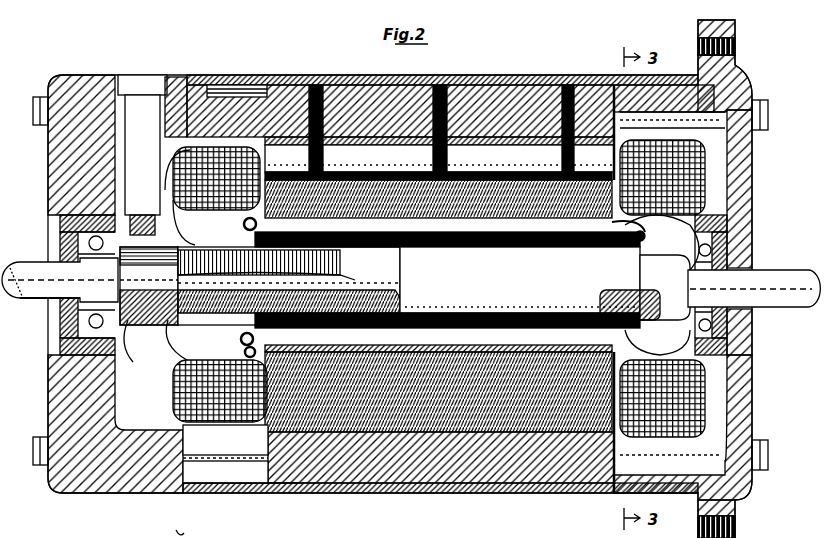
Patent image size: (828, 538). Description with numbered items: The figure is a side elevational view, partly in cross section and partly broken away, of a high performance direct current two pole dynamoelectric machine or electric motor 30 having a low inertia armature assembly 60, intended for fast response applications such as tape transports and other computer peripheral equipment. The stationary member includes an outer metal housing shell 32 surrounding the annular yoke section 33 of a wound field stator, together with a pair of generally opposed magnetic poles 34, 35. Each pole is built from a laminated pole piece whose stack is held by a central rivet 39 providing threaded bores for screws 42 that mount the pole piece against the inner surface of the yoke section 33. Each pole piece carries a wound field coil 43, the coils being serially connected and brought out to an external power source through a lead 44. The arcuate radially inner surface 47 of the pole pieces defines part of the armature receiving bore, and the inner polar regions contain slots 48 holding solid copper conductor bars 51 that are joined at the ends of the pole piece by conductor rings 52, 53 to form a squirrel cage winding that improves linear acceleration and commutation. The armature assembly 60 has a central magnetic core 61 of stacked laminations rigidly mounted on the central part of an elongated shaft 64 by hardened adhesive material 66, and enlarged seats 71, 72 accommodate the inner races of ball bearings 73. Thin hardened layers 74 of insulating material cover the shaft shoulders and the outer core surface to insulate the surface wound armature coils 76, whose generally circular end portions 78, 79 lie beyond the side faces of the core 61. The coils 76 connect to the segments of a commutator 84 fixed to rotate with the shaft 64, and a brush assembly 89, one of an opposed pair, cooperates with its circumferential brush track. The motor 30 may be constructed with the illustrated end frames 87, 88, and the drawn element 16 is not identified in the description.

The stator winding end turn 16 is at (619, 436).
The electric motor 30 is at (480, 502).
The outer metal housing shell 32 is at (504, 82).
The annular yoke section 33 is at (536, 98).
The magnetic pole 34 is at (268, 141).
The magnetic pole 35 is at (264, 431).
The central rivet 39 is at (372, 160).
The screws 42 is at (325, 86).
The wound field coil 43 is at (752, 183).
The lead 44 is at (238, 510).
The radially inner surface 47 is at (633, 247).
The slots 48 is at (632, 353).
The conductor bars 51 is at (243, 224).
The conductor ring 52 is at (240, 339).
The conductor ring 53 is at (642, 228).
The armature assembly 60 is at (148, 328).
The central magnetic core 61 is at (399, 298).
The elongated shaft 64 is at (33, 298).
The hardened adhesive material 66 is at (326, 287).
The seat 71 is at (97, 273).
The seat 72 is at (712, 288).
The ball bearings 73 is at (62, 224).
The hardened layers of insulating material 74 is at (409, 308).
The armature coils 76 is at (368, 287).
The end portion 78 is at (167, 359).
The end portion 79 is at (635, 322).
The commutator 84 is at (122, 364).
The end frame 87 is at (76, 78).
The end frame 88 is at (747, 94).
The brush assembly 89 is at (142, 155).